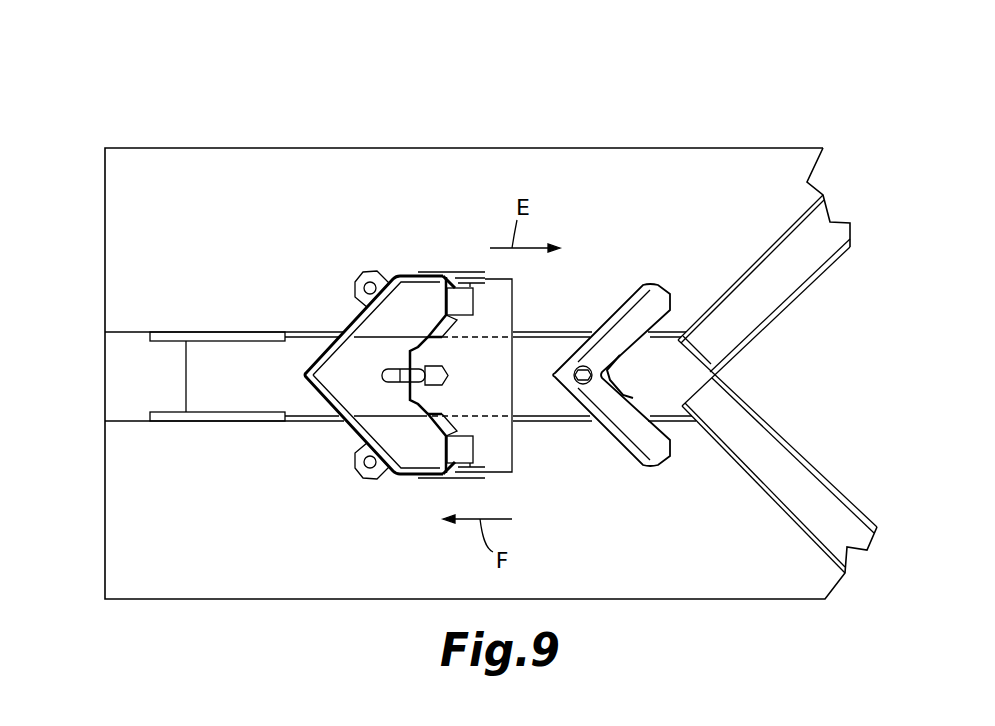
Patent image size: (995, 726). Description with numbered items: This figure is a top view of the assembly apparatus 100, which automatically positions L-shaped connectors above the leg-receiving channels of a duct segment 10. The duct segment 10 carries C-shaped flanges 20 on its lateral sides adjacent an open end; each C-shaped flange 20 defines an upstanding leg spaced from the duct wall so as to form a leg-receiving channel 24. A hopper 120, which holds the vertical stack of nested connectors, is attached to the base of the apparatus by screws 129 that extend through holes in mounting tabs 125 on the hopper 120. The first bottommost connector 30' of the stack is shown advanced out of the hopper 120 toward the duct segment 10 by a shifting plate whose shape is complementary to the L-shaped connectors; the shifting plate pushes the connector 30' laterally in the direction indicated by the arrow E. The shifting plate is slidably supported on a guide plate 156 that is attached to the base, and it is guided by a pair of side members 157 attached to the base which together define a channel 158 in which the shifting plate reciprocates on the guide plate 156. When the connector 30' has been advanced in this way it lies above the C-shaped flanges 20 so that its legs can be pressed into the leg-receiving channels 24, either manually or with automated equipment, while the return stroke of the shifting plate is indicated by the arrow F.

The assembly apparatus 100 is at (693, 138).
The duct segment 10 is at (762, 334).
The C-shaped flange 20 is at (767, 250).
The leg-receiving channel 24 is at (769, 285).
The first bottommost connector 30' is at (611, 389).
The hopper 120 is at (356, 316).
The mounting tab 125 is at (377, 272).
The screw 129 is at (361, 282).
The guide plate 156 is at (132, 398).
The side member 157 is at (173, 333).
The channel 158 is at (170, 345).